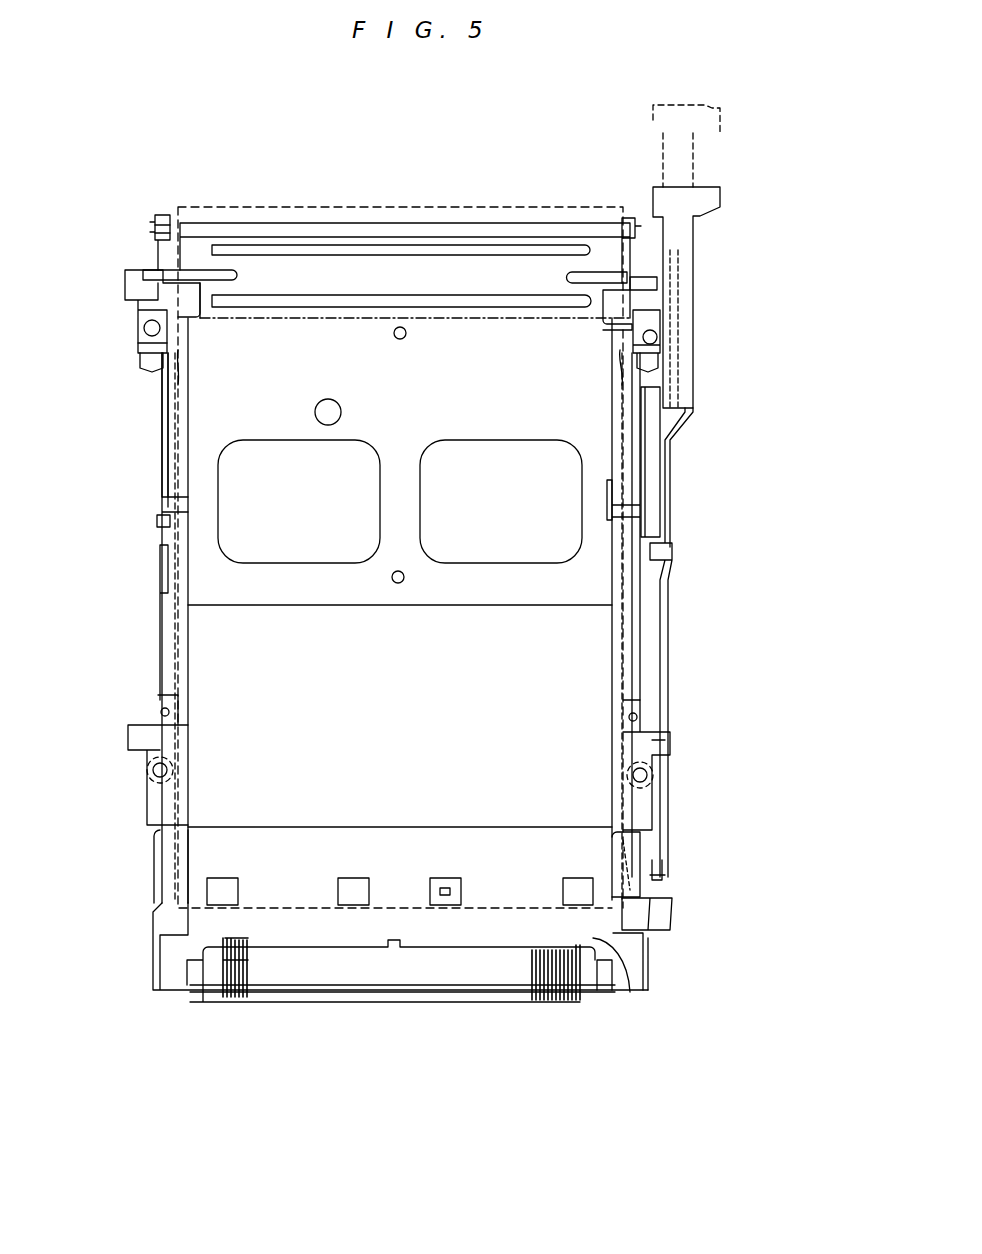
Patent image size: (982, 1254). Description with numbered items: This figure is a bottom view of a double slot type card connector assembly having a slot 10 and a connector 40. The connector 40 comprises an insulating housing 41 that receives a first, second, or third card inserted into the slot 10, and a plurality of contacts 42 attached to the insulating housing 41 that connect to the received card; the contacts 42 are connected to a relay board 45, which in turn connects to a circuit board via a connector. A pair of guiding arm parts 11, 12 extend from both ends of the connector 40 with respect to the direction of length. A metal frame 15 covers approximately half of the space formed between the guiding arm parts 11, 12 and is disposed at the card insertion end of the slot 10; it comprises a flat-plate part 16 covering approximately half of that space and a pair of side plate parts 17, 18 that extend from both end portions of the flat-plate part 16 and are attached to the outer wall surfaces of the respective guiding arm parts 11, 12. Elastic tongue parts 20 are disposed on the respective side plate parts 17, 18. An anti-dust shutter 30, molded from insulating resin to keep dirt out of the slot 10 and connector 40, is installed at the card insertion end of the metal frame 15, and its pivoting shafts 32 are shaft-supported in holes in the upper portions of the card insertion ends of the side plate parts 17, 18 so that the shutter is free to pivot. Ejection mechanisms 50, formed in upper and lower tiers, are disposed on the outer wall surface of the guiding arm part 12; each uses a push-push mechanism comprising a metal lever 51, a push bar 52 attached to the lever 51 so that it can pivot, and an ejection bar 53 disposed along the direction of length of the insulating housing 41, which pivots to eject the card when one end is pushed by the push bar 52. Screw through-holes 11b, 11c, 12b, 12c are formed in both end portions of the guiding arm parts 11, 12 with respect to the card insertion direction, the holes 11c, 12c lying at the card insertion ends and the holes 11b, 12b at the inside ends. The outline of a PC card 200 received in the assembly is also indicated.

The slot 10 is at (196, 452).
The guiding arm part 11 is at (190, 633).
The screw through-hole 11b is at (150, 771).
The screw through-hole 11c is at (138, 327).
The guiding arm part 12 is at (612, 638).
The screw through-hole 12b is at (650, 775).
The screw through-hole 12c is at (660, 335).
The metal frame 15 is at (352, 608).
The flat-plate part 16 is at (458, 590).
The side plate part 17 is at (162, 470).
The side plate part 18 is at (644, 476).
The elastic tongue parts 20 is at (182, 366).
The anti-dust shutter 30 is at (320, 226).
The pivoting shafts 32 is at (152, 226).
The connector 40 is at (150, 970).
The insulating housing 41 is at (597, 945).
The contacts 42 is at (246, 1002).
The relay board 45 is at (385, 992).
The ejection mechanisms 50 is at (732, 190).
The lever 51 is at (678, 513).
The push bar 52 is at (660, 878).
The ejection bar 53 is at (672, 913).
The PC card 200 is at (402, 207).